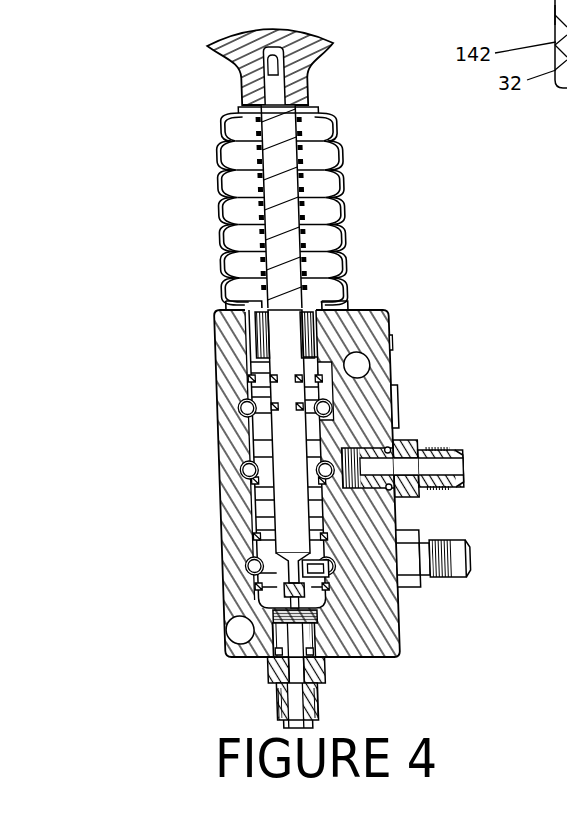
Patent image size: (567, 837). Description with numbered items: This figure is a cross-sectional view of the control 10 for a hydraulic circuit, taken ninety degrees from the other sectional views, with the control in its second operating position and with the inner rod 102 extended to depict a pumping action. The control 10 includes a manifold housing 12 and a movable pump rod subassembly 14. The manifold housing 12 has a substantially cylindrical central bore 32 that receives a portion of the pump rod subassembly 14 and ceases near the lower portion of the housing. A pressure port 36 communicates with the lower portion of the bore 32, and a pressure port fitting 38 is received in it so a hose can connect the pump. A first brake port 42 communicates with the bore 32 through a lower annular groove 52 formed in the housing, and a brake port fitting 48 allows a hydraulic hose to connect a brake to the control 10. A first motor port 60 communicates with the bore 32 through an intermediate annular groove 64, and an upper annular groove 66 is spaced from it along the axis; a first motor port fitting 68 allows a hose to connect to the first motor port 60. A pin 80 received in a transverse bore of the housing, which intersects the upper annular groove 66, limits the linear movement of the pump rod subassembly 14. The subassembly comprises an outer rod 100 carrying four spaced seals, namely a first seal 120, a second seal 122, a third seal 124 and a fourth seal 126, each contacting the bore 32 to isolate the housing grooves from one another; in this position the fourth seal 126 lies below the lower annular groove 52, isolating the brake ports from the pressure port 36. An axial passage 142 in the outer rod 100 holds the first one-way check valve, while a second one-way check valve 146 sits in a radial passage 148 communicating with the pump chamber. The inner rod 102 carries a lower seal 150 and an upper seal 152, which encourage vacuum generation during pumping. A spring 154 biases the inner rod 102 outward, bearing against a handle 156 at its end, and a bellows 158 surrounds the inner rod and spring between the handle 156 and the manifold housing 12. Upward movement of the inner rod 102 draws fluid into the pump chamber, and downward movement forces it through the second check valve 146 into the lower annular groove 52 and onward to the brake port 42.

The control 10 is at (113, 218).
The manifold housing 12 is at (220, 361).
The pump rod subassembly 14 is at (207, 270).
The central bore 32 is at (395, 645).
The pressure port 36 is at (297, 643).
The pressure port fitting 38 is at (318, 706).
The first brake port 42 is at (555, 13).
The second brake port fitting 48 is at (460, 545).
The lower annular groove 52 is at (275, 558).
The first motor port 60 is at (398, 447).
The intermediate annular groove 64 is at (250, 471).
The upper annular groove 66 is at (247, 412).
The first motor port fitting 68 is at (460, 456).
The pin 80 is at (396, 398).
The outer rod 100 is at (318, 322).
The inner rod 102 is at (286, 203).
The first seal 120 is at (252, 378).
The second seal 122 is at (258, 480).
The third seal 124 is at (258, 536).
The fourth seal 126 is at (275, 583).
The axial passage 142 is at (275, 605).
The second one-way check valve 146 is at (322, 571).
The radial passage 148 is at (303, 592).
The first seal 150 is at (303, 377).
The second seal 152 is at (305, 400).
The spring 154 is at (300, 155).
The handle 156 is at (320, 35).
The bellows 158 is at (323, 122).